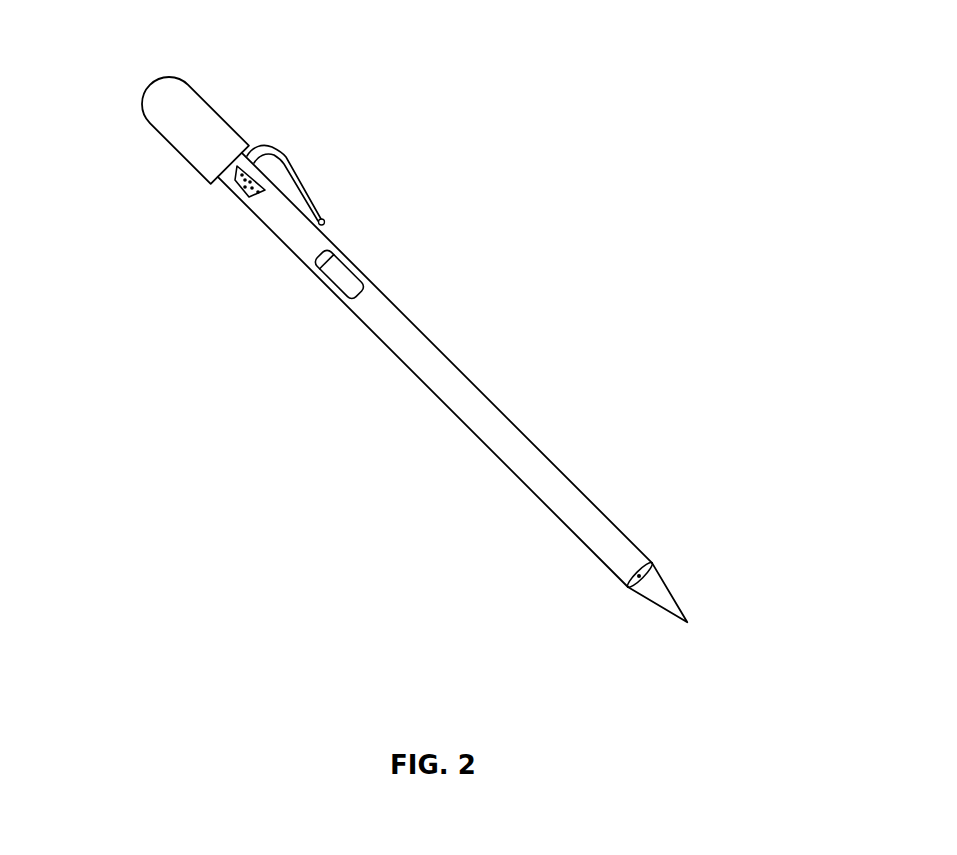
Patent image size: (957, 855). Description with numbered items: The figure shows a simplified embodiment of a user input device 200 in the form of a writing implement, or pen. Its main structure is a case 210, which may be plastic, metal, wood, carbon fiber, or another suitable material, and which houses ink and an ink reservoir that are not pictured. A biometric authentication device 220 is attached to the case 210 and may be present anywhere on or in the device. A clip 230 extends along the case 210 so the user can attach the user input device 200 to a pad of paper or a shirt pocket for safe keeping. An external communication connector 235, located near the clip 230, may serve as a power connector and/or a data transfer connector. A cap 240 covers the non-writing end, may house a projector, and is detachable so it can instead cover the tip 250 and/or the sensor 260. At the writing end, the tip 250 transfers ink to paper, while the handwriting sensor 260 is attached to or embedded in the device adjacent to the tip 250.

The user input device 200 is at (843, 732).
The case 210 is at (390, 303).
The biometric authentication device 220 is at (338, 249).
The clip 230 is at (281, 148).
The external communication connector 235 is at (240, 196).
The cap 240 is at (175, 78).
The tip 250 is at (687, 622).
The handwriting sensor 260 is at (648, 566).